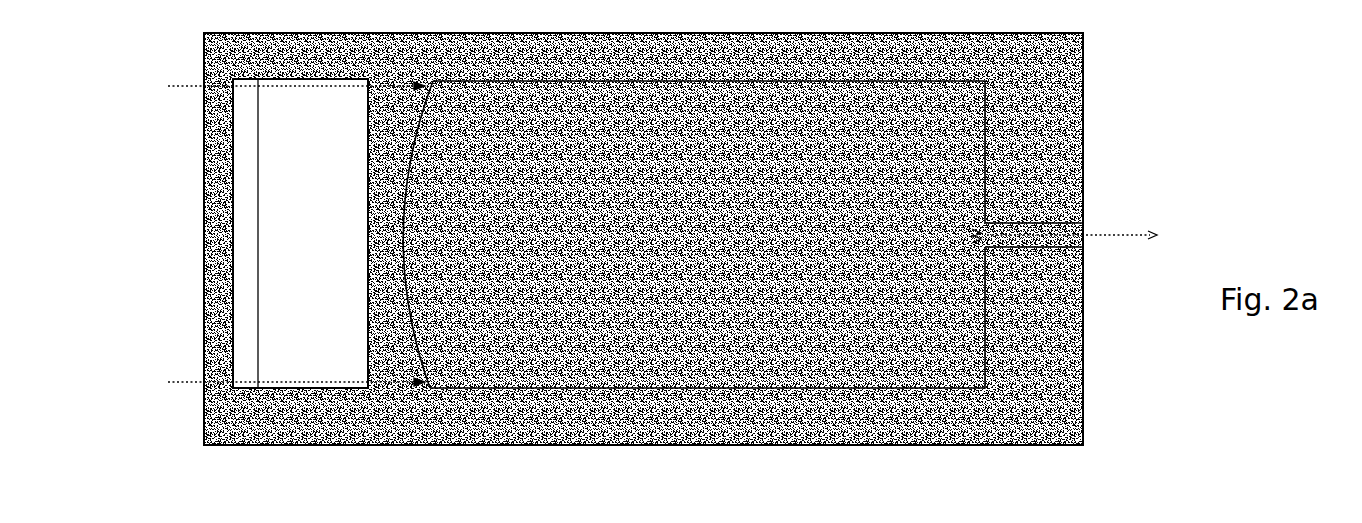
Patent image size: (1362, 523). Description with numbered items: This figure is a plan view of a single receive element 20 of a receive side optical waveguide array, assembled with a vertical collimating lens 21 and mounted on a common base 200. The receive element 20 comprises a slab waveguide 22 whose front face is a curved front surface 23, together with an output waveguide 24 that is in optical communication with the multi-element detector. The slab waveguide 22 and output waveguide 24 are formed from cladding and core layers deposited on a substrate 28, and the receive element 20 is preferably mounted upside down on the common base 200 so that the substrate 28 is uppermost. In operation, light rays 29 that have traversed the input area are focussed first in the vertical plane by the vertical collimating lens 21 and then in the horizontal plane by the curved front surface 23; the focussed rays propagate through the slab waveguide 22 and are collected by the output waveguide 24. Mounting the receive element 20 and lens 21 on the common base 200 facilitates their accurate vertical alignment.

The receive element 20 is at (1180, 102).
The vertical collimating lens 21 is at (300, 233).
The slab waveguide 22 is at (935, 100).
The curved front surface 23 is at (400, 202).
The output waveguide 24 is at (1048, 223).
The substrate 28 is at (1083, 78).
The light rays 29 is at (281, 234).
The common base 200 is at (1083, 407).